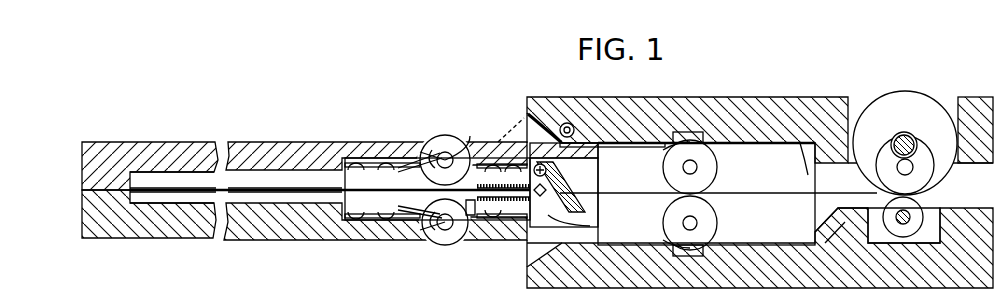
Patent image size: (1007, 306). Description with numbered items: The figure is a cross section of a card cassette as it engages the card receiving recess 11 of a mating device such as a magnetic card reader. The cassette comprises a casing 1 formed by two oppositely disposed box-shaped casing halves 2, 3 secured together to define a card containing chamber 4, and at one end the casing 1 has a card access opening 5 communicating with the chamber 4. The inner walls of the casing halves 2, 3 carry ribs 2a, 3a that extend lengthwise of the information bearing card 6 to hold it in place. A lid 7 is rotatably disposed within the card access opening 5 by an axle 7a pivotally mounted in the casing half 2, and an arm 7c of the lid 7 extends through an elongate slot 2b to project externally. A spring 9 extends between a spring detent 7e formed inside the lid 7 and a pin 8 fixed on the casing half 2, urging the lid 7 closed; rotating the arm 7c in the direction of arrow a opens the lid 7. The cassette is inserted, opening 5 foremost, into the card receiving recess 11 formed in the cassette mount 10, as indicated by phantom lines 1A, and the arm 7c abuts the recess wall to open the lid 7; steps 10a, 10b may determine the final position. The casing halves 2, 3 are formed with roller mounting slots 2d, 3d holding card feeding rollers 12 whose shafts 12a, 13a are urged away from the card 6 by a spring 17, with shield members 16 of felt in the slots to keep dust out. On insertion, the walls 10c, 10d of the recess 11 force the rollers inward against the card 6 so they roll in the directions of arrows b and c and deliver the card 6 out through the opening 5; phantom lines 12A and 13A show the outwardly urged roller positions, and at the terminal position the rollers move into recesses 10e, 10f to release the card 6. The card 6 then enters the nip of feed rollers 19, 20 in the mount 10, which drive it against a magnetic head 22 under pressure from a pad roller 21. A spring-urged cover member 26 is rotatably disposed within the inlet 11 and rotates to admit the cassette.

The casing 1 is at (248, 242).
The phantom lines 1A is at (790, 145).
The casing half 2 is at (128, 150).
The rib 2a is at (183, 172).
The elongate slot 2b is at (470, 142).
The roller mounting slot 2d is at (418, 140).
The casing half 3 is at (128, 236).
The rib 3a is at (170, 204).
The roller mounting slot 3d is at (432, 252).
The card containing chamber 4 is at (258, 162).
The card access opening 5 is at (596, 176).
The information bearing card 6 is at (285, 204).
The lid 7 is at (585, 204).
The axle 7a is at (552, 170).
The arm 7c is at (528, 118).
The spring detent 7e is at (590, 228).
The pin 8 is at (468, 226).
The spring 9 is at (540, 197).
The cassette mount 10 is at (540, 98).
The step 10a is at (815, 246).
The step 10b is at (808, 150).
The wall 10c is at (642, 243).
The wall 10d is at (663, 150).
The recess 10e is at (706, 236).
The recess 10f is at (706, 154).
The card receiving recess 11 is at (522, 255).
The card feeding roller 12 is at (447, 135).
The shaft 12a is at (380, 163).
The phantom lines 12A is at (708, 164).
The shaft 13a is at (425, 236).
The phantom lines 13A is at (708, 228).
The shield member 16 is at (400, 172).
The spring 17 is at (350, 160).
The feed roller 19 is at (880, 160).
The feed roller 20 is at (920, 226).
The pad roller 21 is at (868, 210).
The magnetic head 22 is at (862, 233).
The cover member 26 is at (612, 150).
The arrow a is at (508, 138).
The arrow b is at (438, 145).
The arrow c is at (450, 235).